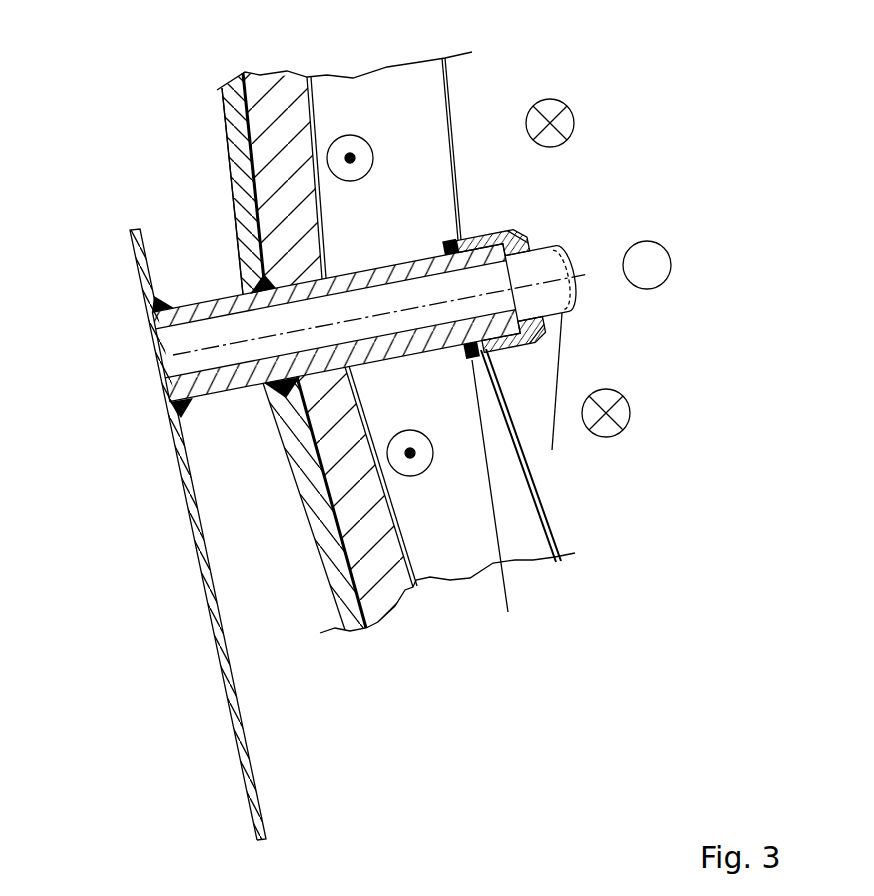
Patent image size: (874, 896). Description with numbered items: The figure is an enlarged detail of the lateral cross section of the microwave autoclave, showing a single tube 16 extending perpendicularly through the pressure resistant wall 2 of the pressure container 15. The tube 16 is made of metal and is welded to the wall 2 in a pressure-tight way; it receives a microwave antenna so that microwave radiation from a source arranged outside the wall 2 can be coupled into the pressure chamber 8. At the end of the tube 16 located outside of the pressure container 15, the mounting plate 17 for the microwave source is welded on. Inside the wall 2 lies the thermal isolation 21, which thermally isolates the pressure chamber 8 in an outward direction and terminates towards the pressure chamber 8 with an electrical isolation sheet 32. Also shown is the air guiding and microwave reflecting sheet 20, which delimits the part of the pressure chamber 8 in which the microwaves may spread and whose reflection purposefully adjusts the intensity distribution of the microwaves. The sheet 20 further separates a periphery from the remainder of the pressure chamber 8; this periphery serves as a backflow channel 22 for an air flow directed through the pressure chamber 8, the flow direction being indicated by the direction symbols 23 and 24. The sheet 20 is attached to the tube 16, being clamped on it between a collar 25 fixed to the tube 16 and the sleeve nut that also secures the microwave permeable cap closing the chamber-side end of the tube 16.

The pressure resistant wall 2 is at (233, 125).
The pressure chamber 8 is at (647, 265).
The pressure container 15 is at (232, 173).
The tube 16 is at (290, 445).
The mounting plate 17 is at (180, 474).
The air guiding and microwave reflecting sheet 20 is at (452, 115).
The thermal isolation 21 is at (275, 110).
The backflow channel 22 is at (370, 110).
The direction symbol 23 is at (552, 97).
The direction symbol 24 is at (338, 135).
The collar 25 is at (508, 612).
The electrical isolation sheet 32 is at (305, 78).